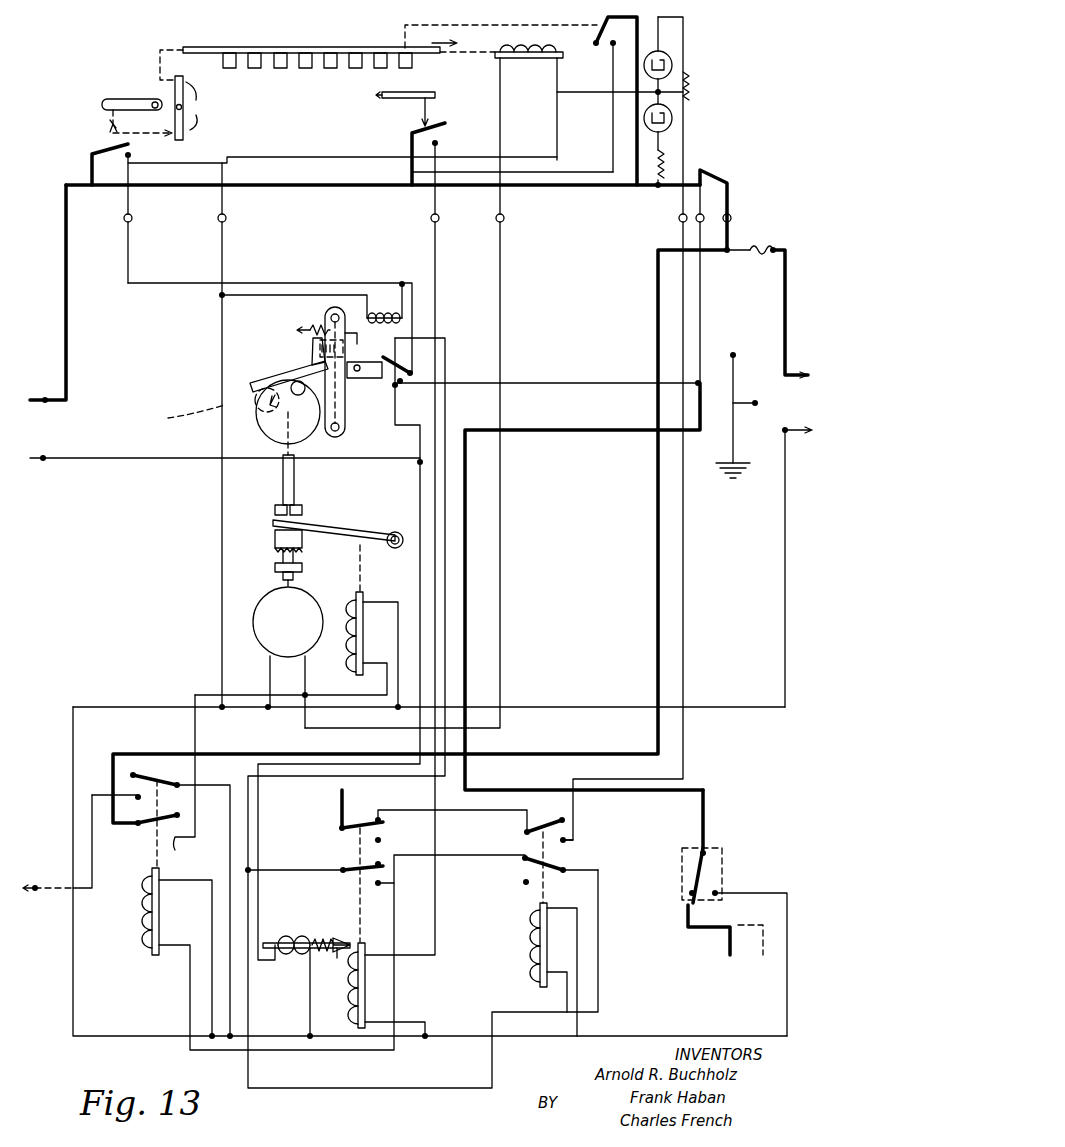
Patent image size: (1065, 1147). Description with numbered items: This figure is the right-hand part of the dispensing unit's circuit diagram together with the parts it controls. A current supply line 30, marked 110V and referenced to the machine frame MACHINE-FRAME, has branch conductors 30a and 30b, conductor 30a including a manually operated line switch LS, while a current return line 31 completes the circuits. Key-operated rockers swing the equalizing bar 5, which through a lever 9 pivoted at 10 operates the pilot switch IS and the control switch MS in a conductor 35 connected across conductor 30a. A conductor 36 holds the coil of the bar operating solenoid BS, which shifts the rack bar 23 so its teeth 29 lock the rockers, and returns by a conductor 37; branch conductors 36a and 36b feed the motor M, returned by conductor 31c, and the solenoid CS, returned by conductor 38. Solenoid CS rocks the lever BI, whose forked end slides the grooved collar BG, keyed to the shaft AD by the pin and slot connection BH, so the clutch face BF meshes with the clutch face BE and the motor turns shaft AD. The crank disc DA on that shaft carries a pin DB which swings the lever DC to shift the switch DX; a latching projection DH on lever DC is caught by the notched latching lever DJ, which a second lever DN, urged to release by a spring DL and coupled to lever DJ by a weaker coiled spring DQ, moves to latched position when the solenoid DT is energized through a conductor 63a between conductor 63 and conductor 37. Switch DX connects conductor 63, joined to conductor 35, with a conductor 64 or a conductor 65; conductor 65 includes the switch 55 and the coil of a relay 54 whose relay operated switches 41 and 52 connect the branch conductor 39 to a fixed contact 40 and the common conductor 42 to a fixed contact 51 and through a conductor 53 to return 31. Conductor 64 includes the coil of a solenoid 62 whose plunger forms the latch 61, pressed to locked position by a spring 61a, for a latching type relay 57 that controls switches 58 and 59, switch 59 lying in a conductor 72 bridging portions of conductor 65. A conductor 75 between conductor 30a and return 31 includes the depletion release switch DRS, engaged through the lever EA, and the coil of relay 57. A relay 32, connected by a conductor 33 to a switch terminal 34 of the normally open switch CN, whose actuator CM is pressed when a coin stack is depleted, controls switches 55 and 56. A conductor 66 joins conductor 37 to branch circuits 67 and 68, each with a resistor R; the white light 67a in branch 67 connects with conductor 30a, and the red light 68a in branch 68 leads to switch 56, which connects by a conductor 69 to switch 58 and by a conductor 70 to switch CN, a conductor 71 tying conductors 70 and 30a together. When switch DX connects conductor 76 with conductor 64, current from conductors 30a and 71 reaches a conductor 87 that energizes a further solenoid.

The lever 5 is at (135, 104).
The pawl arm 9 is at (183, 124).
The pawl 10 is at (183, 104).
The rack 23 is at (330, 50).
The rack teeth 29 is at (300, 68).
The power supply line 30 is at (795, 370).
The main bus wire 30a is at (375, 182).
The return bus wire 30b is at (658, 282).
The wire 31 is at (785, 690).
The wire 31c is at (268, 672).
The relay coil 32 is at (538, 972).
The wire 33 is at (755, 1038).
The wire 34 is at (722, 893).
The wire 35 is at (210, 163).
The wire 36 is at (498, 142).
The wire 36a is at (305, 686).
The wire 36b is at (387, 695).
The wire 37 is at (555, 148).
The wire 38 is at (398, 610).
The wire 39 is at (195, 737).
The contact 40 is at (182, 853).
The switch blade 41 is at (145, 828).
The wire 42 is at (60, 893).
The contact 51 is at (107, 841).
The switch blade 52 is at (155, 782).
The wire 53 is at (230, 840).
The relay coil 54 is at (150, 935).
The switch blade 55 is at (555, 862).
The switch blade 56 is at (558, 820).
The relay coil 57 is at (357, 1022).
The switch blade 58 is at (370, 822).
The switch blade 59 is at (355, 868).
The relay armature 61 is at (337, 948).
The spring 61a is at (322, 938).
The coil 62 is at (280, 940).
The wire 63 is at (128, 283).
The wire 63a is at (345, 280).
The wire 64 is at (420, 462).
The wire 65 is at (450, 412).
The wire 66 is at (575, 92).
The junction 67 is at (650, 188).
The signal lamp 67a is at (670, 123).
The wire 68 is at (683, 150).
The signal lamp 68a is at (670, 60).
The wire 69 is at (482, 815).
The wire 70 is at (650, 792).
The wire 71 is at (498, 696).
The wire 72 is at (298, 872).
The wire 75 is at (432, 834).
The wire 76 is at (555, 383).
The wire 87 is at (148, 458).
The ignition switch IS is at (90, 152).
The drive release switch DRS is at (412, 133).
The actuating arm EA is at (436, 96).
The master switch MS is at (606, 101).
The brake solenoid BS is at (434, 386).
The line switch LS is at (712, 175).
The resistor R is at (690, 86).
The supply voltage 110V is at (790, 408).
The machine frame ground MACHINE-FRAME is at (740, 398).
The drum DA is at (272, 440).
The pin DB is at (305, 412).
The arm DC is at (268, 375).
The block DH is at (352, 380).
The plunger DJ is at (310, 348).
The spring DL is at (322, 326).
The link DN is at (349, 403).
The latch DQ is at (318, 348).
The solenoid DT is at (384, 308).
The switch DX is at (378, 340).
The rod AD is at (295, 490).
The block BH is at (274, 510).
The block BG is at (300, 508).
The lever BI is at (380, 532).
The coupling BF is at (303, 548).
The shaft BE is at (274, 568).
The motor M is at (288, 657).
The clutch solenoid CS is at (365, 640).
The contact CN is at (682, 876).
The contact arm CM is at (712, 935).